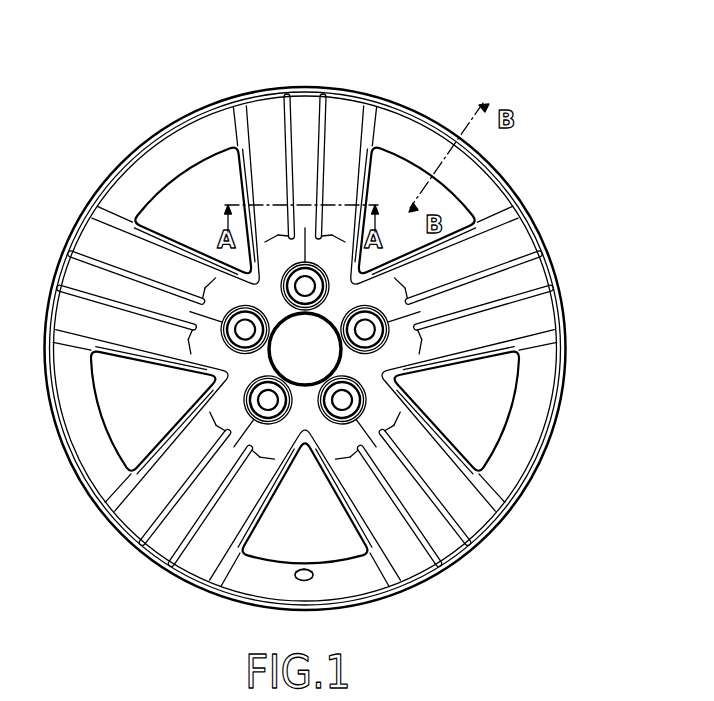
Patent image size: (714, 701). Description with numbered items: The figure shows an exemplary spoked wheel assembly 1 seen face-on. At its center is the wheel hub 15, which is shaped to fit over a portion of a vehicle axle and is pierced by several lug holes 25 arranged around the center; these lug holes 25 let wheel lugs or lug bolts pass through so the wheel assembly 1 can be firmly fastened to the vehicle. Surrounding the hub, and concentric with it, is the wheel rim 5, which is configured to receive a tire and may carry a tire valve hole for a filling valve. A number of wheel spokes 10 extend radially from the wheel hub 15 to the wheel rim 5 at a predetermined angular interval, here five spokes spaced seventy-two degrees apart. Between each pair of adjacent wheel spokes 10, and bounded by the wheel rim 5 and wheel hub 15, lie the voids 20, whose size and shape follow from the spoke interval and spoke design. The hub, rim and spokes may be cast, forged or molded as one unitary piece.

The spoked wheel assembly 1 is at (405, 84).
The wheel rim 5 is at (522, 440).
The wheel spokes 10 is at (525, 248).
The wheel hub 15 is at (395, 379).
The voids 20 is at (167, 413).
The lug holes 25 is at (343, 403).